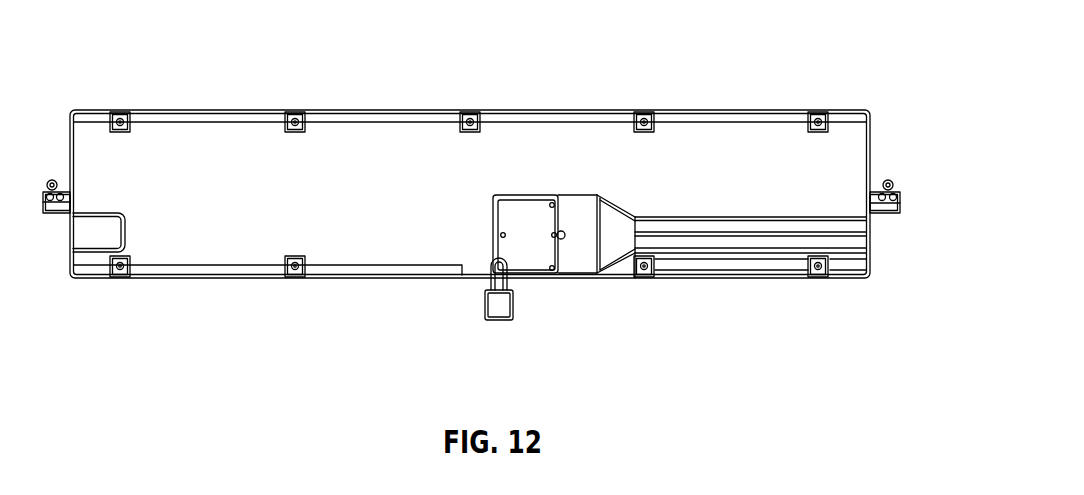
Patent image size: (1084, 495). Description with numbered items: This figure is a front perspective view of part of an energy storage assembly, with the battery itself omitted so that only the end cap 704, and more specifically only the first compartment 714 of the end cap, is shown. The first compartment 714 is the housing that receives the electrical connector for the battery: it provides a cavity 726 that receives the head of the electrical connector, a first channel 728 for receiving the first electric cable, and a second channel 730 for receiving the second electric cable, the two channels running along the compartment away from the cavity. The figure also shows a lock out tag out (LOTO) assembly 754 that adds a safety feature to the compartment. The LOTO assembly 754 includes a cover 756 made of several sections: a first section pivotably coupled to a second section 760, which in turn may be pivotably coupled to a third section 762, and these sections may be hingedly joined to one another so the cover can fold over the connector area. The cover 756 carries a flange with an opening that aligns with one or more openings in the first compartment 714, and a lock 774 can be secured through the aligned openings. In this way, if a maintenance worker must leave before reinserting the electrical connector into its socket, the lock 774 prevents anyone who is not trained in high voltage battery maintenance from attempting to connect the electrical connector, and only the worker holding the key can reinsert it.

The end cap 704 is at (498, 209).
The first compartment 714 is at (745, 73).
The lock out tag out (LOTO) assembly 754 is at (453, 290).
The cover 756 is at (524, 217).
The second section 760 is at (541, 258).
The third section 762 is at (515, 215).
The cavity 726 is at (583, 247).
The first channel 728 is at (840, 226).
The second channel 730 is at (848, 245).
The lock 774 is at (503, 326).